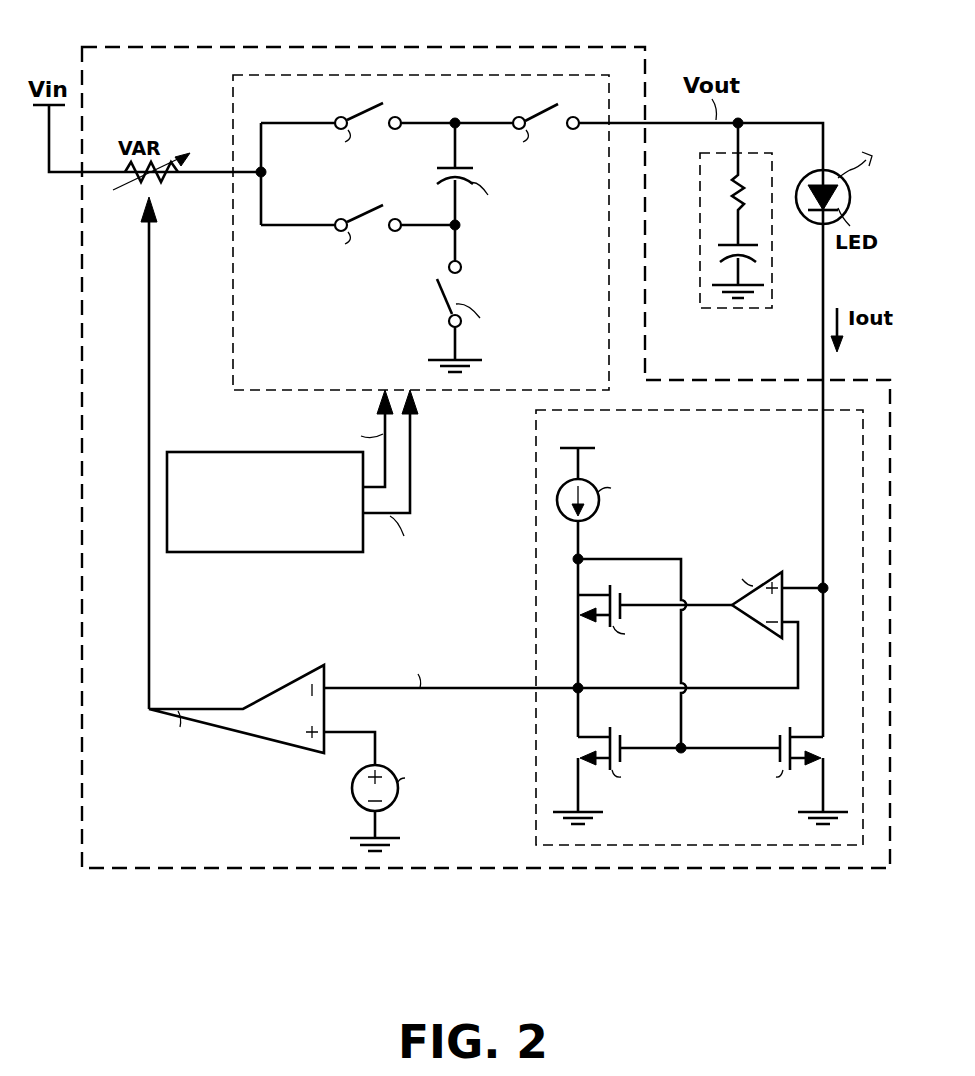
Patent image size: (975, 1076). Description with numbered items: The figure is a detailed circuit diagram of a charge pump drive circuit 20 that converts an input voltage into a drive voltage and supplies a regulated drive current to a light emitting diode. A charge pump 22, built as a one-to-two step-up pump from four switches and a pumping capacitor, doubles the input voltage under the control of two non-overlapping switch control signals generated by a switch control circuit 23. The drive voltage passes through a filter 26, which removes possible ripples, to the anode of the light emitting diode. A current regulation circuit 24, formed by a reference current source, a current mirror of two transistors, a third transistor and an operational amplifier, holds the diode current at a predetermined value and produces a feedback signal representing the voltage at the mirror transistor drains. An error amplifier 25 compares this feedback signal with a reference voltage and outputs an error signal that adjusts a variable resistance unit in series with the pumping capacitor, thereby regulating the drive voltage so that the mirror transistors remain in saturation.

The charge pump drive circuit 20 is at (160, 46).
The charge pump 22 is at (480, 392).
The switch control circuit 23 is at (226, 452).
The current regulation circuit 24 is at (536, 521).
The error amplifier 25 is at (283, 733).
The filter 26 is at (733, 310).